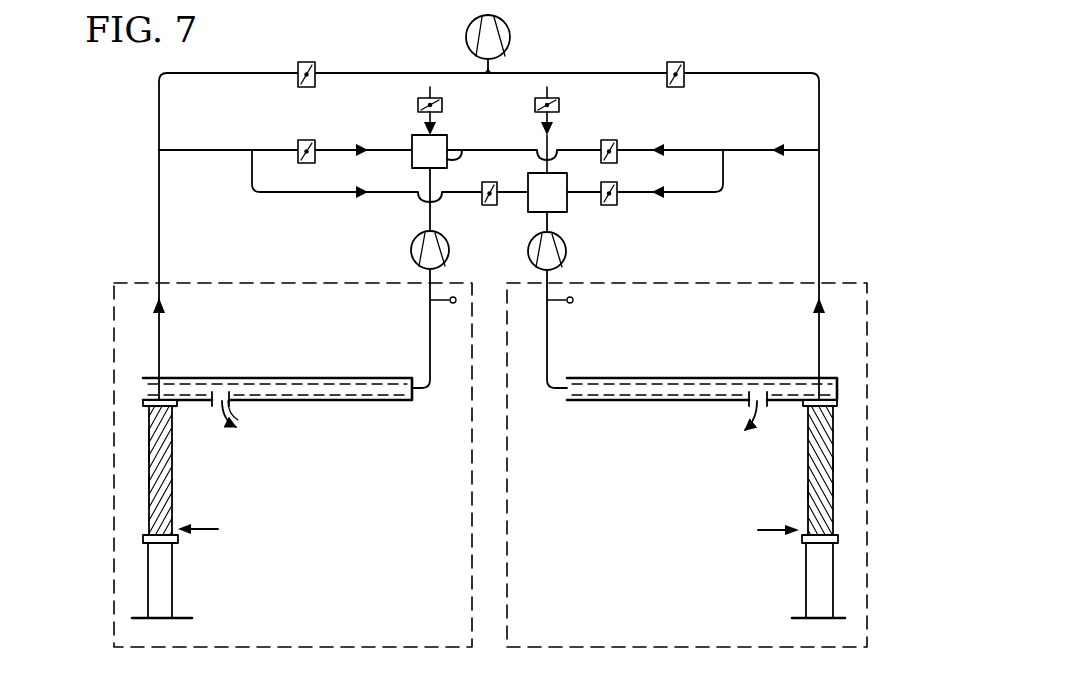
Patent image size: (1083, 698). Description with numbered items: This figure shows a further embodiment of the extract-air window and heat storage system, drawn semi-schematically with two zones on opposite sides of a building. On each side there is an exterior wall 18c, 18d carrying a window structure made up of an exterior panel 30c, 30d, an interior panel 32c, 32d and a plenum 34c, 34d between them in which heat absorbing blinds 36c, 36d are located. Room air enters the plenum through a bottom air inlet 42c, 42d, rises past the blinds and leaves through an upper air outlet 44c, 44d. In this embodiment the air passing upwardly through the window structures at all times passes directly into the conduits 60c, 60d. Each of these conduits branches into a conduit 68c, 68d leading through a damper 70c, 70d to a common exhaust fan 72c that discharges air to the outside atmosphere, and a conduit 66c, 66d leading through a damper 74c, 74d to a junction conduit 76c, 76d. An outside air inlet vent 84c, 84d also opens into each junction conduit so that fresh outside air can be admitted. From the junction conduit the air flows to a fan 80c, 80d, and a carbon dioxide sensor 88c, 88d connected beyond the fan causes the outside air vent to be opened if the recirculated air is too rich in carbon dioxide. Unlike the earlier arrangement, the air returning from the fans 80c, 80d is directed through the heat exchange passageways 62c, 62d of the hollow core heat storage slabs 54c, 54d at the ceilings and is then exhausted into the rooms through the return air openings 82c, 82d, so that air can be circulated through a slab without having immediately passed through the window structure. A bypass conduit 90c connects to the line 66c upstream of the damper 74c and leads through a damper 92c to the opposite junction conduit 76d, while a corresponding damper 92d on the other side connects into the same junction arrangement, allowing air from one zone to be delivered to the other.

The exterior wall 18c is at (165, 588).
The exterior wall 18d is at (810, 580).
The exterior panel 30c is at (148, 438).
The exterior panel 30d is at (808, 493).
The interior panel 32c is at (172, 458).
The interior panel 32d is at (867, 426).
The plenum 34c is at (153, 456).
The plenum 34d is at (867, 452).
The heat absorbing blinds 36c is at (150, 482).
The heat absorbing blinds 36d is at (867, 476).
The bottom air inlet 42c is at (176, 525).
The bottom air inlet 42d is at (762, 519).
The upper air outlet 44c is at (143, 402).
The upper air outlet 44d is at (867, 400).
The hollow core slab 54c is at (315, 378).
The hollow core slab 54d is at (718, 378).
The conduit 60c is at (160, 256).
The conduit 60d is at (818, 237).
The heat exchange passageways 62c is at (330, 400).
The heat exchange passageways 62d is at (664, 400).
The conduit 66c is at (231, 150).
The conduit 66d is at (748, 150).
The conduit 68c is at (240, 73).
The conduit 68d is at (736, 73).
The damper 70c is at (308, 62).
The damper 70d is at (676, 62).
The exhaust fan 72c is at (509, 41).
The damper 74c is at (310, 140).
The damper 74d is at (614, 142).
The junction conduit 76c is at (447, 147).
The junction conduit 76d is at (567, 207).
The fan 80c is at (411, 252).
The fan 80d is at (566, 251).
The return air openings 82c is at (230, 404).
The return air openings 82d is at (763, 404).
The outside air inlet vent 84c is at (442, 105).
The outside air inlet vent 84d is at (559, 106).
The carbon dioxide sensor 88c is at (447, 296).
The carbon dioxide sensor 88d is at (561, 304).
The bypass conduit 90c is at (306, 194).
The damper 92c is at (492, 207).
The damper 92d is at (614, 190).